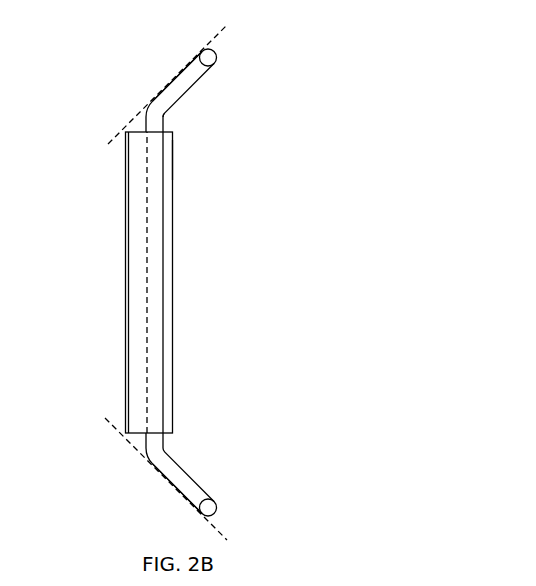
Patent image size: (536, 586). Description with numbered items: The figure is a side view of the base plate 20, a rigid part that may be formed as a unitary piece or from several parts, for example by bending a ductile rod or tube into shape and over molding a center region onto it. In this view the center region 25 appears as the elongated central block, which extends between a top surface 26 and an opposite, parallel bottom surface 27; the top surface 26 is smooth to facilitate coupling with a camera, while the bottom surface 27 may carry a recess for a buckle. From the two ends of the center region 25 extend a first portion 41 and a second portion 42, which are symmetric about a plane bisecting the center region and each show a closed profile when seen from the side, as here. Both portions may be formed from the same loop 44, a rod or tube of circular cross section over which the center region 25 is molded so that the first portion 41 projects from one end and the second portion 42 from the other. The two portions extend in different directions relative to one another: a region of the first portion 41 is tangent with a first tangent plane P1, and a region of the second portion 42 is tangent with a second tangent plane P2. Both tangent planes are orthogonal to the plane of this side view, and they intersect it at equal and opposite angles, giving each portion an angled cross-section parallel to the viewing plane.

The base plate 20 is at (326, 62).
The center region 25 is at (163, 265).
The top surface 26 is at (120, 262).
The bottom surface 27 is at (180, 160).
The first portion 41 is at (231, 50).
The second portion 42 is at (232, 432).
The loop 44 is at (172, 102).
The first tangent plane P1 is at (120, 133).
The second tangent plane P2 is at (115, 428).